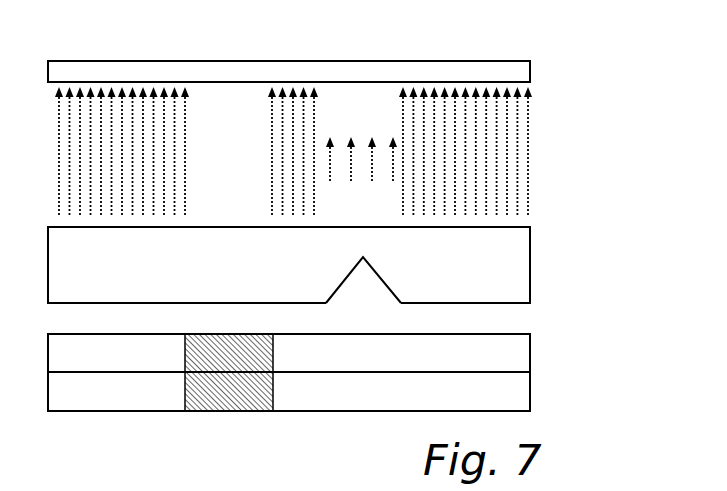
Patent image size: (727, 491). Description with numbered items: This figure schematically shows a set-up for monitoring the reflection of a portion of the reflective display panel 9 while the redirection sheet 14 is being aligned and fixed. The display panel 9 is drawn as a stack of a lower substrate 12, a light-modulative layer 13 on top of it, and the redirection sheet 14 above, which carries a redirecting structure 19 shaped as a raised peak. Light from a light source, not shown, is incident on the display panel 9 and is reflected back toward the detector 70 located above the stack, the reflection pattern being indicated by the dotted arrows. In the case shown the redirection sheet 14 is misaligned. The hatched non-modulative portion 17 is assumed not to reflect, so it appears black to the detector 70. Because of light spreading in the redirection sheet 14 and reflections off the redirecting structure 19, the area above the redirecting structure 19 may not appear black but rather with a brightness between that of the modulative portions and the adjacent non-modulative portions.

The detector 70 is at (525, 72).
The redirection sheet 14 is at (531, 263).
The redirecting structure 19 is at (383, 285).
The light-modulative layer 13 is at (530, 352).
The lower substrate 12 is at (530, 393).
The non-modulative portion 17 is at (223, 411).
The display panel 9 is at (363, 389).